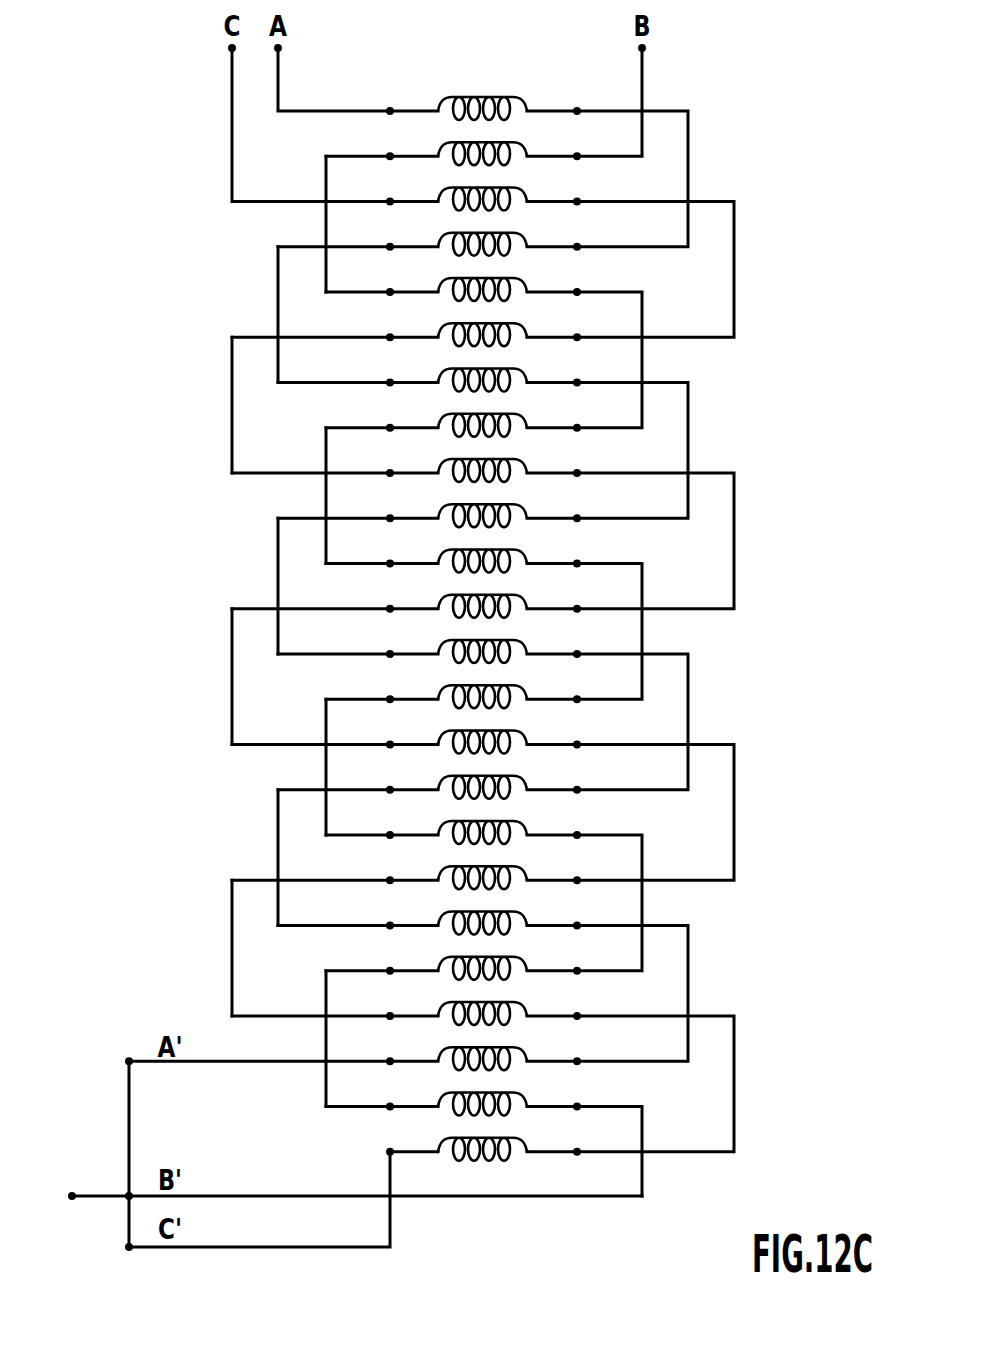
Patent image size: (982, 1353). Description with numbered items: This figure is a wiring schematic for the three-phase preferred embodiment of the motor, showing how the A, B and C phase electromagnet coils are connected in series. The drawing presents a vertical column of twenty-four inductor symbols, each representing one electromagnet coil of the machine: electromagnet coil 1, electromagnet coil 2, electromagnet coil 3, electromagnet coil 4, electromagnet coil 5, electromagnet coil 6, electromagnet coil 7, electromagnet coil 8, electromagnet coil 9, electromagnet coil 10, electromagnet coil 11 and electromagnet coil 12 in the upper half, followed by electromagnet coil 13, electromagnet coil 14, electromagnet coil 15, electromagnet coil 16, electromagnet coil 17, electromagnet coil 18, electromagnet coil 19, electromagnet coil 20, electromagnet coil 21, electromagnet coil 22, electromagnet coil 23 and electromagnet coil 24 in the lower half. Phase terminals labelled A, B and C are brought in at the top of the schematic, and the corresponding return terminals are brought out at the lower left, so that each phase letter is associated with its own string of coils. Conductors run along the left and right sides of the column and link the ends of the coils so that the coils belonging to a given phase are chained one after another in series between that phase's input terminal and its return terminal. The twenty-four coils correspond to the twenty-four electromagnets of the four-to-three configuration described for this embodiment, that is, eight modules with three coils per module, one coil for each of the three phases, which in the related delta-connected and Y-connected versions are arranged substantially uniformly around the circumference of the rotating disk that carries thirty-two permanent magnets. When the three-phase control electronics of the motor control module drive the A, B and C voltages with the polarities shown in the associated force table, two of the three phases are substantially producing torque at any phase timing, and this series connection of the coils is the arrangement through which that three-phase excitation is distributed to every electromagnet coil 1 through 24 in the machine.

The electromagnet coil 1 is at (499, 100).
The electromagnet coil 2 is at (500, 145).
The electromagnet coil 3 is at (500, 191).
The electromagnet coil 4 is at (500, 236).
The electromagnet coil 5 is at (500, 281).
The electromagnet coil 6 is at (500, 326).
The electromagnet coil 7 is at (500, 372).
The electromagnet coil 8 is at (500, 417).
The electromagnet coil 9 is at (500, 462).
The electromagnet coil 10 is at (501, 507).
The electromagnet coil 11 is at (500, 553).
The electromagnet coil 12 is at (501, 598).
The electromagnet coil 13 is at (501, 643).
The electromagnet coil 14 is at (501, 688).
The electromagnet coil 15 is at (501, 734).
The electromagnet coil 16 is at (501, 779).
The electromagnet coil 17 is at (501, 824).
The electromagnet coil 18 is at (501, 869).
The electromagnet coil 19 is at (501, 915).
The electromagnet coil 20 is at (501, 960).
The electromagnet coil 21 is at (501, 1005).
The electromagnet coil 22 is at (501, 1050).
The electromagnet coil 23 is at (501, 1096).
The electromagnet coil 24 is at (501, 1141).